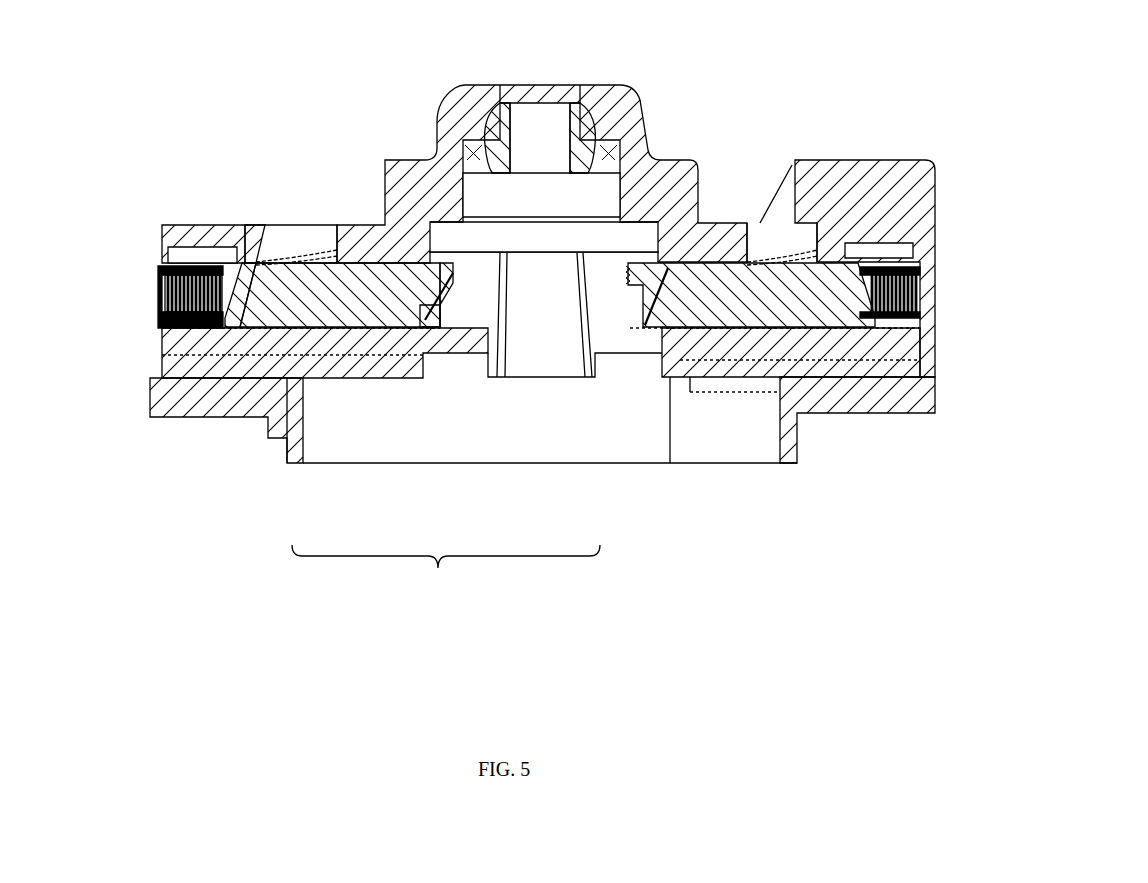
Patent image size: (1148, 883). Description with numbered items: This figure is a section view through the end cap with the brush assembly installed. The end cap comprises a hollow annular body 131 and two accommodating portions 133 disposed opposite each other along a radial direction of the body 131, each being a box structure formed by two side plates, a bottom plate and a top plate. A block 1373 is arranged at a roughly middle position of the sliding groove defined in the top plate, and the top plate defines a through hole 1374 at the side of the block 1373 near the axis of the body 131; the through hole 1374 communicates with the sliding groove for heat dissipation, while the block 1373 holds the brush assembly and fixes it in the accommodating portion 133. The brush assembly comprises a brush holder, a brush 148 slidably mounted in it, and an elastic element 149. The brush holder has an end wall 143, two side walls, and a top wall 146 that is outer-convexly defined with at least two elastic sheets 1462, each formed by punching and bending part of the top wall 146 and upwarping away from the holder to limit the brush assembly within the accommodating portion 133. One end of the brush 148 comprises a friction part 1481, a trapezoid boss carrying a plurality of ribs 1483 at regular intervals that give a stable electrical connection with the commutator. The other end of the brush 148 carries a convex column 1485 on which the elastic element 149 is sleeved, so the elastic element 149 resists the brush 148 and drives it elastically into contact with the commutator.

The body 131 is at (870, 388).
The accommodating portion 133 is at (190, 233).
The block 1373 is at (258, 250).
The through hole 1374 is at (297, 233).
The end wall 143 is at (160, 283).
The top wall 146 is at (347, 227).
The elastic sheet 1462 is at (792, 160).
The brush 148 is at (549, 440).
The friction part 1481 is at (425, 275).
The rib 1483 is at (453, 268).
The convex column 1485 is at (223, 268).
The elastic element 149 is at (160, 297).